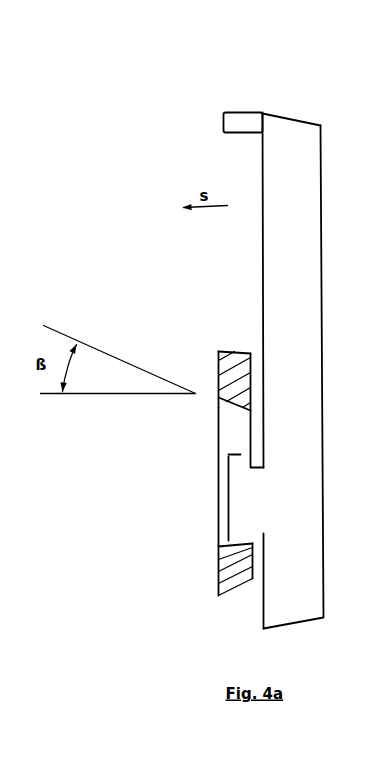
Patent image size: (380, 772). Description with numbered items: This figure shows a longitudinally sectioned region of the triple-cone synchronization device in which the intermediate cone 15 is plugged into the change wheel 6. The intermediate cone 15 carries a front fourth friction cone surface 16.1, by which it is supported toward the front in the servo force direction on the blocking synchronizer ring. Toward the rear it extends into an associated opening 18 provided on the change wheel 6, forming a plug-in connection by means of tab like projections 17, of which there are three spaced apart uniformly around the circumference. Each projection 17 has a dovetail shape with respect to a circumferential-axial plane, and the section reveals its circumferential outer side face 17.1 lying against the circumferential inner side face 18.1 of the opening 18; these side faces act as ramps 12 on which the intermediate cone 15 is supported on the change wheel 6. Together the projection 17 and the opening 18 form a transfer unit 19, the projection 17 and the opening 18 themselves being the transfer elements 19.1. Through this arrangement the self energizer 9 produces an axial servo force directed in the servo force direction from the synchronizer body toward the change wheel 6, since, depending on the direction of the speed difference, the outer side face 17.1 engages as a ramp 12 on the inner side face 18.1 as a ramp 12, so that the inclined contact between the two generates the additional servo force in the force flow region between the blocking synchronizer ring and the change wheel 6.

The change wheel 6 is at (215, 348).
The self energizer 9 is at (191, 375).
The ramp 12 is at (237, 411).
The intermediate cone 15 is at (318, 121).
The front fourth friction cone surface 16.1 is at (280, 115).
The projection 17 is at (228, 343).
The circumferential outer side face 17.1 is at (250, 466).
The opening 18 is at (216, 432).
The circumferential inner side face 18.1 is at (214, 496).
The transfer unit 19 is at (168, 500).
The transfer element 19.1 is at (222, 112).